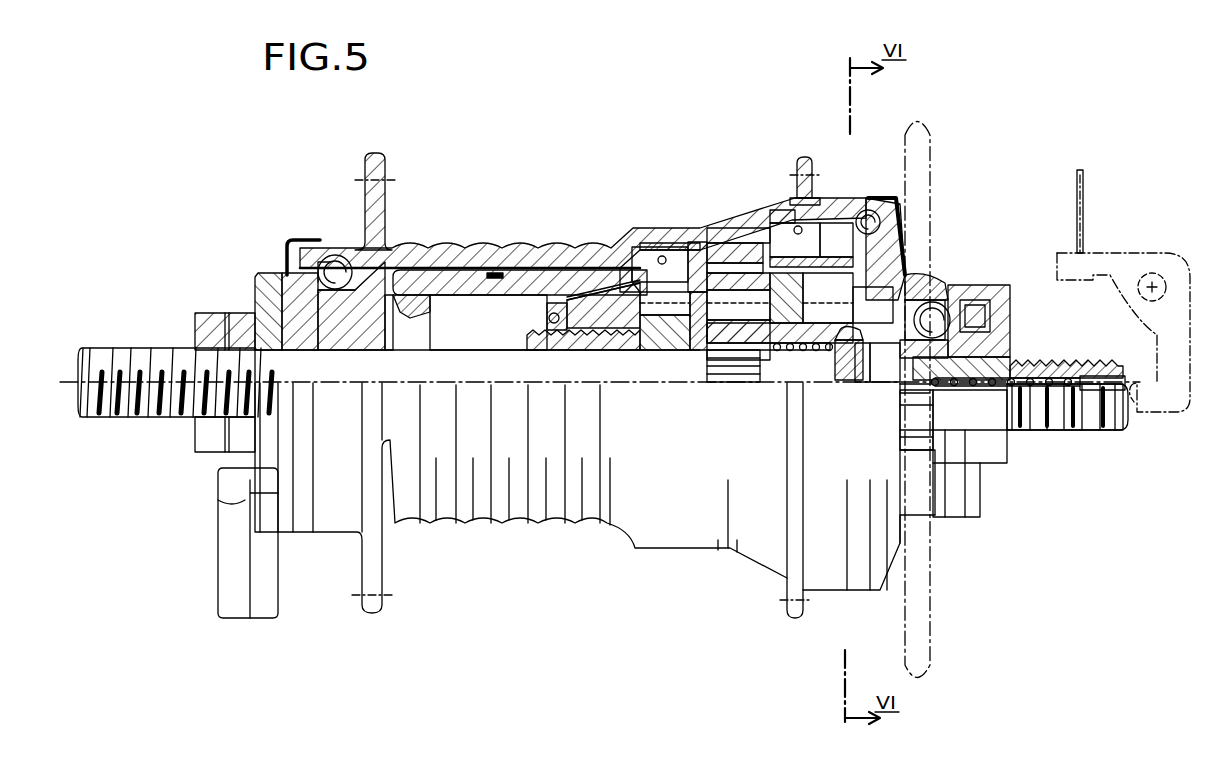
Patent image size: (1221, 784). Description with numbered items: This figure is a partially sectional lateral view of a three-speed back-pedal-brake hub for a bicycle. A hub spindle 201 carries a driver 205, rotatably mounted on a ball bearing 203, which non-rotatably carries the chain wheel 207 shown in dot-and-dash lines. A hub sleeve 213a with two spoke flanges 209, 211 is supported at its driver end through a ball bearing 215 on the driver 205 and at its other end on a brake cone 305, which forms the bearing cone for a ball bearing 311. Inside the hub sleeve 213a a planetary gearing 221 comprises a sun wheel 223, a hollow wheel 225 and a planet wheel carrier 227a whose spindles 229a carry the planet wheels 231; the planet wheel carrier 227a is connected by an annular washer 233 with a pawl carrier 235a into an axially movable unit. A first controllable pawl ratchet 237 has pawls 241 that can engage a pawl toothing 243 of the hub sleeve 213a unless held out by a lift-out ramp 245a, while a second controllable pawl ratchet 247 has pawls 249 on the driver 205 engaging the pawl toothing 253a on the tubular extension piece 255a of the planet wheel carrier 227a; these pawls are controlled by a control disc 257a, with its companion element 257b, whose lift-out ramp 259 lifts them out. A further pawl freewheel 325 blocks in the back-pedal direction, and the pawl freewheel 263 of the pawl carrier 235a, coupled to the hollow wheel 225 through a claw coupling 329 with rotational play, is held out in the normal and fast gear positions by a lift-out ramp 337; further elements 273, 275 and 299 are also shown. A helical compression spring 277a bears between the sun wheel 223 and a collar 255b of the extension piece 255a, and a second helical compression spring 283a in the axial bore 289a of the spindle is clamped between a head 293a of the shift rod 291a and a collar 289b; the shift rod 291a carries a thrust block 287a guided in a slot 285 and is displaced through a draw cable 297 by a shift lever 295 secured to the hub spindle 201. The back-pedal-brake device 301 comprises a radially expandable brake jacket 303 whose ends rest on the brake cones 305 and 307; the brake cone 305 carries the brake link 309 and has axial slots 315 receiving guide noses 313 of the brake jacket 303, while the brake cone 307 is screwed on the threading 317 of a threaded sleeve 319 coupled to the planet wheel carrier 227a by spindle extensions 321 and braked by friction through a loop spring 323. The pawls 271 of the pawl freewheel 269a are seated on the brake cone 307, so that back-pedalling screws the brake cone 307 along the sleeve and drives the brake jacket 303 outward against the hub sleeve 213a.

The hub spindle 201 is at (1103, 435).
The ball bearing 203 is at (948, 318).
The driver 205 is at (908, 268).
The chain wheel 207 is at (928, 128).
The spoke flange 209 is at (800, 192).
The spoke flange 211 is at (381, 150).
The hub sleeve 213a is at (690, 233).
The ball bearing 215 is at (900, 215).
The planetary gearing 221 is at (710, 270).
The sun wheel 223 is at (690, 360).
The hollow wheel 225 is at (718, 262).
The planet wheel carrier 227a is at (700, 350).
The spindles 229a is at (722, 345).
The planet wheels 231 is at (745, 350).
The annular washer 233 is at (692, 350).
The pawl carrier 235a is at (875, 255).
The first controllable pawl ratchet 237 is at (825, 235).
The pawls 241 is at (775, 240).
The pawl toothing 243 is at (812, 190).
The lift-out ramp 245a is at (785, 215).
The second controllable pawl ratchet 247 is at (987, 325).
The pawls 249 is at (958, 300).
The pawl toothing 253a is at (735, 382).
The annular extension piece 255a is at (738, 308).
The collar 255b is at (775, 352).
The control disc 257a is at (850, 365).
The clutch key 257b is at (830, 360).
The lift-out ramp 259 is at (862, 385).
The pawl freewheel 263 is at (908, 290).
The pawl freewheel 269a is at (650, 255).
The pawls 271 is at (632, 288).
The pawl pin 273 is at (663, 256).
The spring 275 is at (887, 385).
The helical compression spring 277a is at (790, 352).
The second helical compression spring 283a is at (985, 450).
The slot 285 is at (940, 392).
The thrust block 287a is at (840, 370).
The axial bore 289a is at (1085, 370).
The collar 289b is at (1000, 360).
The shift rod 291a is at (1055, 432).
The head 293a is at (1128, 412).
The shift lever 295 is at (1145, 330).
The draw cable 297 is at (1085, 190).
The seal 299 is at (882, 225).
The back-pedal-brake device 301 is at (478, 298).
The brake jacket 303 is at (440, 278).
The brake cone 305 is at (283, 288).
The brake cone 307 is at (602, 300).
The brake link 309 is at (232, 580).
The ball bearing 311 is at (338, 262).
The guide noses 313 is at (420, 300).
The axial slots 315 is at (380, 350).
The threading 317 is at (545, 320).
The threaded sleeve 319 is at (562, 347).
The spindle extensions 321 is at (645, 350).
The loop spring 323 is at (533, 292).
The pawl freewheel 325 is at (930, 292).
The claw coupling 329 is at (740, 240).
The lift-out ramp 337 is at (818, 257).